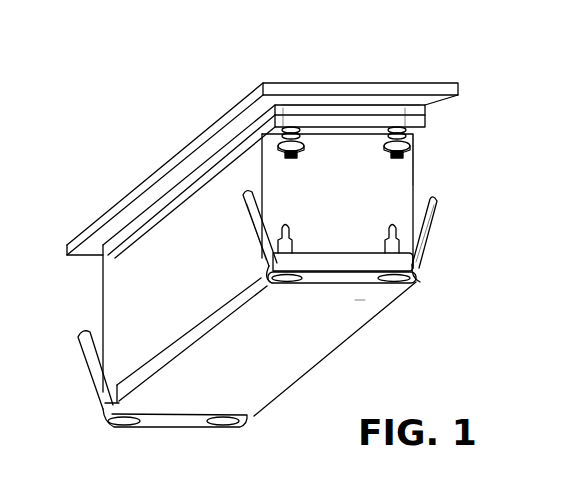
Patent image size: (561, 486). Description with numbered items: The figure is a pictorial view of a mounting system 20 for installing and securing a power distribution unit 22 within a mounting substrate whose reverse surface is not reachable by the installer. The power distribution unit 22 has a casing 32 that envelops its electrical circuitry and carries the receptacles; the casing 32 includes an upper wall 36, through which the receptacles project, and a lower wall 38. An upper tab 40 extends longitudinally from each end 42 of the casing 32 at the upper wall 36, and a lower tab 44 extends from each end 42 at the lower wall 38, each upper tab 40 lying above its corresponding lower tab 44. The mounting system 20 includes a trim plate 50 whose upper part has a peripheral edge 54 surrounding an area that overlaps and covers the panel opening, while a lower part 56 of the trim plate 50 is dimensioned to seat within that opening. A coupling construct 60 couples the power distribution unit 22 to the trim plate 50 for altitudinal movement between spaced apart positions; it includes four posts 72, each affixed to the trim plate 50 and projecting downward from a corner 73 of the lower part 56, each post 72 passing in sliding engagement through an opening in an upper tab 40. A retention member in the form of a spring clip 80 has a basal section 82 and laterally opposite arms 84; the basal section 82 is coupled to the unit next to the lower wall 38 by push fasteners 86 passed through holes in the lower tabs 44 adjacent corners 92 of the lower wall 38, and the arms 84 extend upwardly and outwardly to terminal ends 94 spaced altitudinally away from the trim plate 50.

The mounting system 20 is at (228, 78).
The power distribution unit 22 is at (427, 170).
The casing 32 is at (125, 287).
The upper wall 36 is at (107, 258).
The lower wall 38 is at (361, 307).
The upper tab 40 is at (310, 121).
The end 42 is at (384, 200).
The lower tab 44 is at (323, 268).
The trim plate 50 is at (426, 72).
The peripheral edge 54 is at (251, 84).
The lower part 56 is at (367, 110).
The coupling construct 60 is at (423, 146).
The post 72 is at (391, 158).
The corner 73 is at (274, 108).
The spring clip 80 is at (341, 292).
The basal section 82 is at (362, 283).
The arm 84 is at (428, 238).
The push fastener 86 is at (386, 246).
The corner 92 is at (418, 264).
The terminal end 94 is at (433, 200).